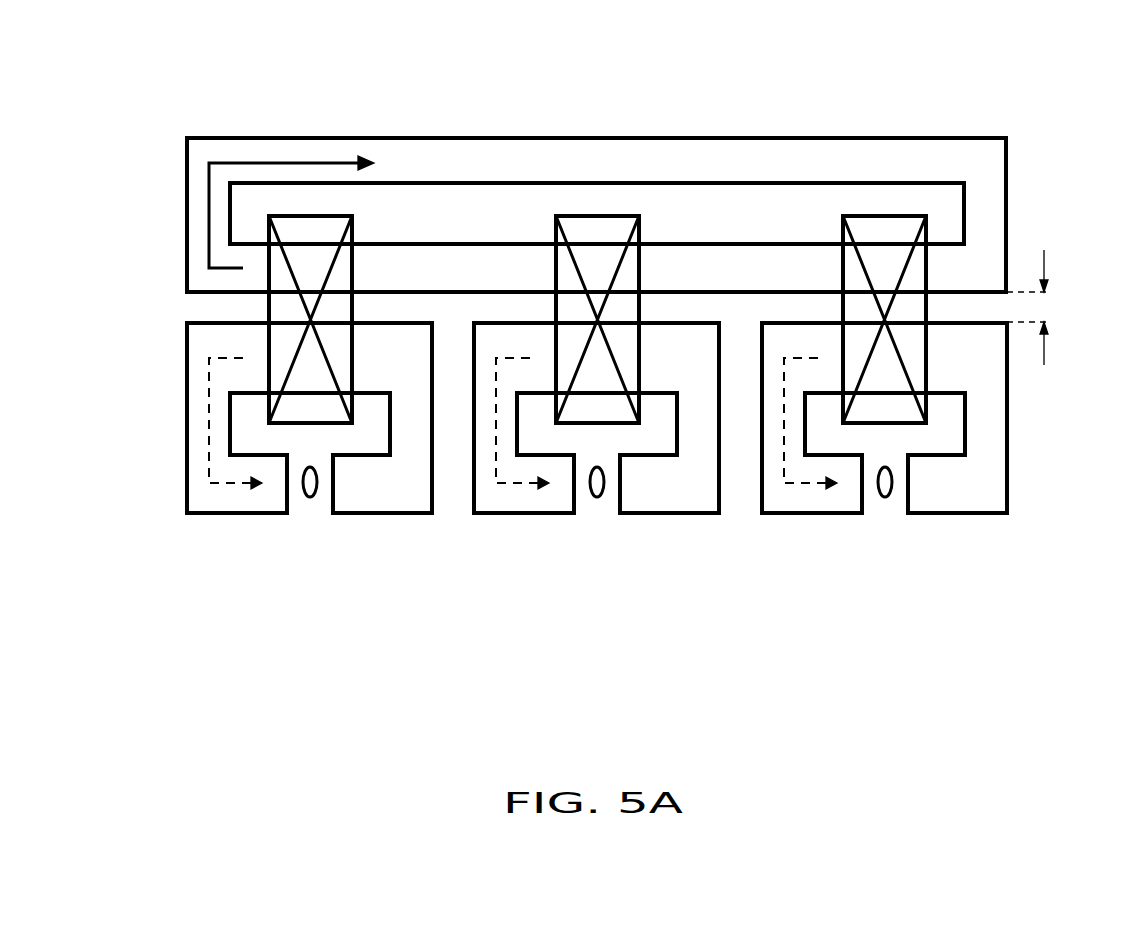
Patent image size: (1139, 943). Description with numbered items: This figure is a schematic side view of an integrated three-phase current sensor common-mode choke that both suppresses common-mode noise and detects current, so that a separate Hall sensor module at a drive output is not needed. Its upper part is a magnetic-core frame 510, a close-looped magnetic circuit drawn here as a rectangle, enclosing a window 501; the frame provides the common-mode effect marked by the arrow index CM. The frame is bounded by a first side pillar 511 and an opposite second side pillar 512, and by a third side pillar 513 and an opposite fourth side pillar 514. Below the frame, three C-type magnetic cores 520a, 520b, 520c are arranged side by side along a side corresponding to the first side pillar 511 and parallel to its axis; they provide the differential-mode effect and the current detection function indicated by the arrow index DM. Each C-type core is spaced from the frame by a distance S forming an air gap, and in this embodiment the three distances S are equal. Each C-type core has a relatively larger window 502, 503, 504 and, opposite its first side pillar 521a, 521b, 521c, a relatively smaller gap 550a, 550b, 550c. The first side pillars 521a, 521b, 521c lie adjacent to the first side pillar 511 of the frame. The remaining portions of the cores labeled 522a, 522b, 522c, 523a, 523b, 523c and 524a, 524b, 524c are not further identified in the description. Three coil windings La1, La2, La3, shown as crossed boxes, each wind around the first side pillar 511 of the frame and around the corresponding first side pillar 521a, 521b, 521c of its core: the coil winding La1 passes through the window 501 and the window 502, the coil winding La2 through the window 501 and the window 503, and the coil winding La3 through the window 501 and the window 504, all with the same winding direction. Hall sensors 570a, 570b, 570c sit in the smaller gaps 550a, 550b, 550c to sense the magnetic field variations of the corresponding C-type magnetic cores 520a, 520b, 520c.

The magnetic-core frame 510 is at (1007, 137).
The window 501 is at (883, 195).
The first side pillar 511 is at (510, 260).
The second side pillar 512 is at (598, 150).
The third side pillar 513 is at (195, 215).
The fourth side pillar 514 is at (995, 214).
The window 502 is at (267, 442).
The window 503 is at (554, 442).
The window 504 is at (842, 442).
The coil winding La1 is at (352, 230).
The coil winding La2 is at (638, 230).
The coil winding La3 is at (843, 230).
The common-mode effect CM is at (288, 160).
The differential-mode effect DM is at (233, 486).
The distance S is at (1041, 307).
The C-type magnetic core 520a is at (187, 514).
The C-type magnetic core 520b is at (474, 514).
The C-type magnetic core 520c is at (762, 514).
The first side pillar 521a is at (247, 340).
The first side pillar 521b is at (528, 340).
The first side pillar 521c is at (815, 340).
The second portion of secondary winding 522a is at (350, 484).
The second portion of secondary winding 522b is at (637, 484).
The second portion of secondary winding 522c is at (925, 484).
The third portion of secondary winding 523a is at (197, 432).
The third portion of secondary winding 523b is at (484, 432).
The third portion of secondary winding 523c is at (772, 432).
The fourth portion of secondary winding 524a is at (412, 426).
The fourth portion of secondary winding 524b is at (699, 426).
The fourth portion of secondary winding 524c is at (987, 426).
The gap 550a is at (302, 505).
The gap 550b is at (589, 505).
The gap 550c is at (877, 505).
The Hall sensor 570a is at (317, 497).
The Hall sensor 570b is at (604, 497).
The Hall sensor 570c is at (892, 497).